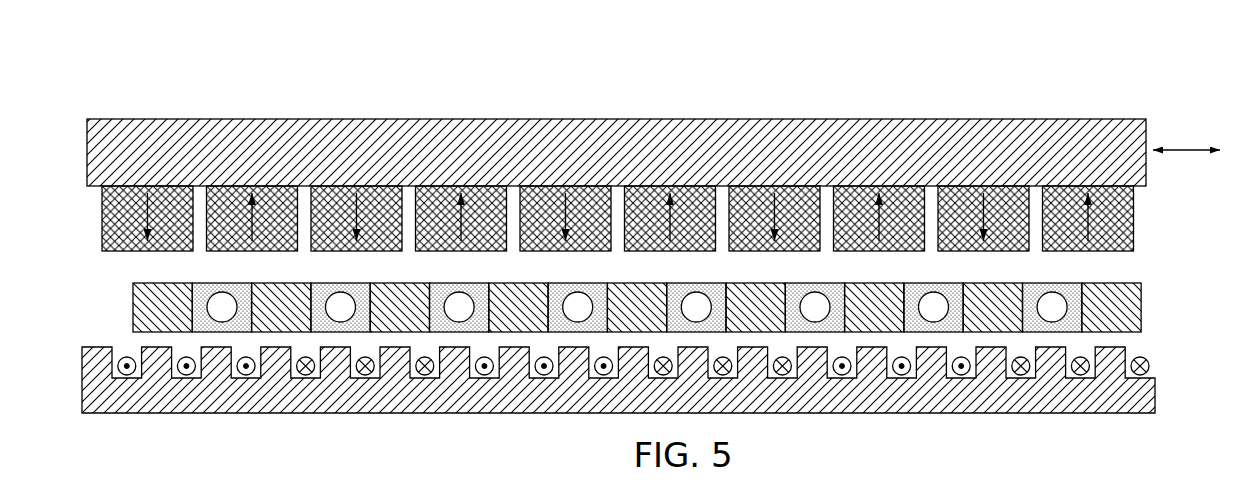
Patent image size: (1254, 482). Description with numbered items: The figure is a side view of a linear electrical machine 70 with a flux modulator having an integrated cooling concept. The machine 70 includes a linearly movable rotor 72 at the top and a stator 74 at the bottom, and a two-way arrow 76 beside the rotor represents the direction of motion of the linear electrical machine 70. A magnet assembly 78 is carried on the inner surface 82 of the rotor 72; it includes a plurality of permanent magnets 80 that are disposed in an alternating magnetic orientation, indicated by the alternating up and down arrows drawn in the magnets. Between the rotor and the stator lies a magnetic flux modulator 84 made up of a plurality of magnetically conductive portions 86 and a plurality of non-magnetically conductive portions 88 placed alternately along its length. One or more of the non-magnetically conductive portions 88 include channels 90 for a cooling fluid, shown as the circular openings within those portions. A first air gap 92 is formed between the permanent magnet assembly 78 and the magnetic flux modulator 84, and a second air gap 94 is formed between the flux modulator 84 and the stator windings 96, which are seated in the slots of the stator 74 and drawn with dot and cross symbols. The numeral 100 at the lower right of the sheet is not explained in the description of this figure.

The linear motor assembly 70 is at (1140, 66).
The top plate (back iron) 72 is at (650, 120).
The stator core 74 is at (483, 413).
The direction of travel 76 is at (1185, 149).
The magnet array 78 is at (1139, 208).
The permanent magnets 80 is at (860, 197).
The mover 82 is at (90, 187).
The intermediate plate 84 is at (1148, 302).
The ferromagnetic segments 86 is at (133, 313).
The non-magnetic spacers 88 is at (200, 283).
The cooling channels 90 is at (223, 300).
The upper air gap 92 is at (1130, 268).
The lower air gap 94 is at (1127, 342).
The coil conductors 96 is at (243, 368).
The base 100 is at (1148, 480).